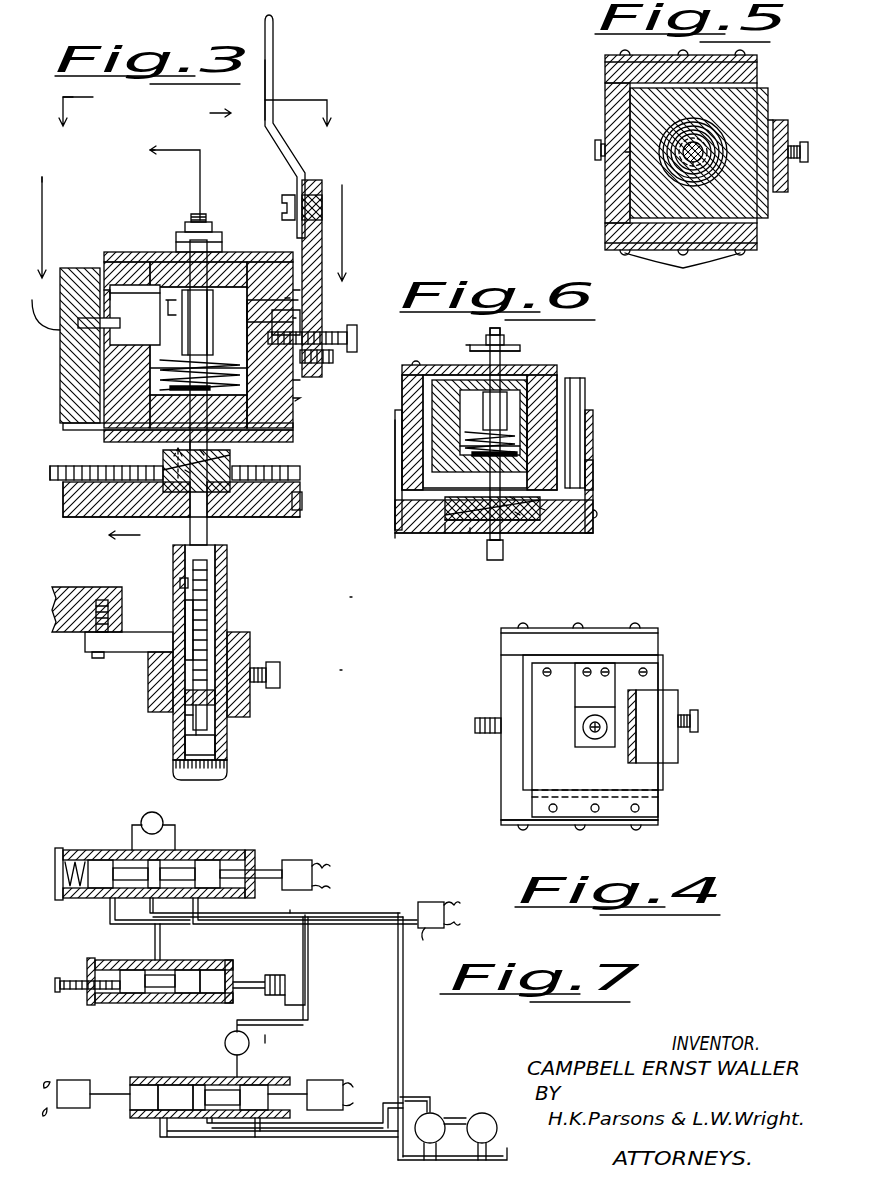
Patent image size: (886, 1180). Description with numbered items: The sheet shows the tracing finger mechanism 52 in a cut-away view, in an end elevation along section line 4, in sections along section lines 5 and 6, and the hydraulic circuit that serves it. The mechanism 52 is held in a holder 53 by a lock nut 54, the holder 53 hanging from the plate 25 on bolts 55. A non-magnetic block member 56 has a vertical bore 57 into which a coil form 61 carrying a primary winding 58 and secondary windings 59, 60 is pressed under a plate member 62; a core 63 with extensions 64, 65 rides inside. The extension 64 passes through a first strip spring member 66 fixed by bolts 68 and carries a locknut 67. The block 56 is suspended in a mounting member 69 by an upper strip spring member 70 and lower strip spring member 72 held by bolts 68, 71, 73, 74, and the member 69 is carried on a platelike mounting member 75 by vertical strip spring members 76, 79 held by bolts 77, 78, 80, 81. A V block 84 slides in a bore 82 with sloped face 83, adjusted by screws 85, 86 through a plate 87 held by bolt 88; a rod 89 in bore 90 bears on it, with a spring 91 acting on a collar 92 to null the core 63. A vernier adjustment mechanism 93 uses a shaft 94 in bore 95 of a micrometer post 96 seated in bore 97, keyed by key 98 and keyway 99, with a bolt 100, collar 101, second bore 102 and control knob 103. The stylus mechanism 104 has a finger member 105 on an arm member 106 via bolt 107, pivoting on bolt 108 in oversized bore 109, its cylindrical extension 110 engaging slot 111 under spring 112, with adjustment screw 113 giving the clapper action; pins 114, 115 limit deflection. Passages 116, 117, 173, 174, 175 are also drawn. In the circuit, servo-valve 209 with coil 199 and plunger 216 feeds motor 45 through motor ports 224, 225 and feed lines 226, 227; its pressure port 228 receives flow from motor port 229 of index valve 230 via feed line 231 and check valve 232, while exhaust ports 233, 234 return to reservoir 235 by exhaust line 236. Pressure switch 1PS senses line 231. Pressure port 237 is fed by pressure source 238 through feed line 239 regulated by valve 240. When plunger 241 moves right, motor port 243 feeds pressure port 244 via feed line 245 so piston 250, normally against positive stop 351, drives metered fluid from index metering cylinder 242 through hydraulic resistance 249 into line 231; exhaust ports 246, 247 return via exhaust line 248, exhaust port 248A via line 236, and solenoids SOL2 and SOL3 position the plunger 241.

In FIG. 3, the section line 4— 4 is at (191, 127).
In FIG. 3, the section line 5— 5 is at (189, 172).
In FIG. 3, the section line 6— 6 is at (124, 342).
In FIG. 3, the plate 25 is at (60, 632).
In FIG. 7, the hydraulic motor 45 is at (145, 812).
In FIG. 3, the tracing finger mechanism 52 is at (357, 610).
In FIG. 3, the holder 53 is at (148, 690).
In FIG. 3, the lock nut 54 is at (278, 676).
In FIG. 3, the bolts 55 is at (95, 652).
In FIG. 3, the block member 56 is at (290, 410).
In FIG. 5, the block member 56 is at (630, 108).
In FIG. 6, the block member 56 is at (555, 380).
In FIG. 4, the block member 56 is at (530, 765).
In FIG. 3, the vertical bore 57 is at (175, 400).
In FIG. 5, the vertical bore 57 is at (705, 140).
In FIG. 6, the vertical bore 57 is at (462, 470).
In FIG. 3, the primary winding 58 is at (295, 320).
In FIG. 5, the primary winding 58 is at (718, 168).
In FIG. 6, the primary winding 58 is at (500, 410).
In FIG. 3, the secondary winding 59 is at (130, 295).
In FIG. 5, the secondary winding 59 is at (697, 166).
In FIG. 3, the secondary winding 60 is at (100, 362).
In FIG. 6, the secondary winding 60 is at (415, 440).
In FIG. 3, the coil form 61 is at (215, 290).
In FIG. 5, the coil form 61 is at (685, 140).
In FIG. 3, the plate member 62 is at (165, 270).
In FIG. 6, the plate member 62 is at (545, 375).
In FIG. 3, the core 63 is at (290, 300).
In FIG. 5, the core 63 is at (683, 160).
In FIG. 6, the core 63 is at (520, 392).
In FIG. 3, the core extension 64 is at (198, 232).
In FIG. 6, the core extension 64 is at (505, 345).
In FIG. 4, the core extension 64 is at (610, 730).
In FIG. 3, the core extension 65 is at (160, 372).
In FIG. 6, the core extension 65 is at (505, 434).
In FIG. 3, the first strip spring member 66 is at (205, 246).
In FIG. 6, the first strip spring member 66 is at (475, 350).
In FIG. 4, the first strip spring member 66 is at (585, 713).
In FIG. 3, the locknut 67 is at (205, 232).
In FIG. 6, the locknut 67 is at (500, 345).
In FIG. 4, the locknut 67 is at (585, 735).
In FIG. 3, the bolts 68 is at (150, 257).
In FIG. 6, the bolts 68 is at (540, 360).
In FIG. 4, the bolts 68 is at (605, 670).
In FIG. 3, the mounting member 69 is at (120, 426).
In FIG. 5, the mounting member 69 is at (755, 236).
In FIG. 6, the mounting member 69 is at (560, 372).
In FIG. 4, the mounting member 69 is at (508, 655).
In FIG. 3, the upper strip spring member 70 is at (120, 262).
In FIG. 6, the upper strip spring member 70 is at (432, 375).
In FIG. 4, the upper strip spring member 70 is at (660, 807).
In FIG. 6, the bolts 71 is at (420, 365).
In FIG. 4, the bolts 71 is at (548, 808).
In FIG. 3, the lower strip spring member 72 is at (290, 434).
In FIG. 6, the lower strip spring member 72 is at (525, 500).
In FIG. 3, the bolts 73 is at (145, 500).
In FIG. 6, the bolts 73 is at (595, 533).
In FIG. 3, the bolts 74 is at (225, 475).
In FIG. 6, the platelike mounting member 75 is at (478, 533).
In FIG. 5, the first vertical strip spring member 76 is at (605, 60).
In FIG. 6, the first vertical strip spring member 76 is at (595, 490).
In FIG. 4, the first vertical strip spring member 76 is at (650, 630).
In FIG. 6, the bolts 77 is at (585, 400).
In FIG. 4, the bolts 77 is at (548, 670).
In FIG. 5, the bolts 78 is at (740, 52).
In FIG. 6, the bolts 78 is at (593, 515).
In FIG. 5, the second vertical strip spring member 79 is at (605, 247).
In FIG. 6, the second vertical strip spring member 79 is at (405, 533).
In FIG. 4, the second vertical strip spring member 79 is at (658, 823).
In FIG. 6, the bolts 80 is at (395, 425).
In FIG. 4, the bolts 80 is at (525, 830).
In FIG. 5, the bolts 81 is at (682, 270).
In FIG. 6, the bolts 81 is at (395, 540).
In FIG. 3, the bore 82 is at (90, 505).
In FIG. 6, the bore 82 is at (450, 533).
In FIG. 3, the sloped face 83 is at (185, 470).
In FIG. 6, the sloped face 83 is at (520, 515).
In FIG. 3, the V block 84 is at (222, 520).
In FIG. 6, the V block 84 is at (545, 510).
In FIG. 3, the screw 85 is at (60, 500).
In FIG. 5, the screw 85 is at (595, 152).
In FIG. 4, the screw 85 is at (478, 718).
In FIG. 3, the screw 86 is at (300, 478).
In FIG. 3, the plate 87 is at (285, 515).
In FIG. 3, the bolt 88 is at (302, 505).
In FIG. 3, the rod 89 is at (205, 450).
In FIG. 6, the rod 89 is at (515, 500).
In FIG. 3, the bore 90 is at (190, 440).
In FIG. 6, the bore 90 is at (490, 540).
In FIG. 3, the spring 91 is at (170, 376).
In FIG. 6, the spring 91 is at (470, 448).
In FIG. 3, the collar 92 is at (170, 388).
In FIG. 6, the collar 92 is at (490, 452).
In FIG. 3, the vernier adjustment mechanism 93 is at (350, 674).
In FIG. 3, the shaft 94 is at (215, 632).
In FIG. 6, the shaft 94 is at (495, 560).
In FIG. 3, the bore 95 is at (185, 715).
In FIG. 3, the micrometer post 96 is at (175, 755).
In FIG. 3, the bore 97 is at (160, 660).
In FIG. 3, the key 98 is at (180, 585).
In FIG. 3, the keyway 99 is at (190, 612).
In FIG. 3, the bolt 100 is at (250, 638).
In FIG. 3, the collar 101 is at (215, 700).
In FIG. 3, the second bore 102 is at (210, 735).
In FIG. 3, the control knob 103 is at (225, 770).
In FIG. 3, the stylus mechanism 104 is at (217, 93).
In FIG. 3, the finger member 105 is at (276, 62).
In FIG. 5, the finger member 105 is at (780, 135).
In FIG. 4, the finger member 105 is at (635, 715).
In FIG. 3, the arm member 106 is at (312, 185).
In FIG. 5, the arm member 106 is at (790, 135).
In FIG. 4, the arm member 106 is at (672, 760).
In FIG. 3, the bolt 107 is at (286, 196).
In FIG. 3, the bolt 108 is at (358, 336).
In FIG. 5, the bolt 108 is at (800, 162).
In FIG. 4, the bolt 108 is at (700, 720).
In FIG. 3, the oversized bore 109 is at (293, 312).
In FIG. 3, the cylindrical extension 110 is at (300, 290).
In FIG. 3, the slot 111 is at (305, 300).
In FIG. 3, the spring 112 is at (332, 334).
In FIG. 3, the adjustment screw 113 is at (335, 357).
In FIG. 6, the pin 114 is at (600, 500).
In FIG. 3, the pin 115 is at (110, 325).
In FIG. 3, the passage 116 is at (300, 384).
In FIG. 3, the passage 117 is at (300, 402).
In FIG. 3, the passage 173 is at (110, 296).
In FIG. 3, the passage 174 is at (105, 292).
In FIG. 3, the conduit 175 is at (32, 300).
In FIG. 7, the coil 199 is at (312, 865).
In FIG. 7, the servo-valve 209 is at (75, 850).
In FIG. 7, the plunger 216 is at (248, 862).
In FIG. 7, the motor port 224 is at (205, 850).
In FIG. 7, the motor port 225 is at (128, 850).
In FIG. 7, the feed line 226 is at (178, 850).
In FIG. 7, the feed line 227 is at (130, 850).
In FIG. 7, the pressure port 228 is at (150, 915).
In FIG. 7, the motor port 229 is at (245, 1078).
In FIG. 7, the index valve 230 is at (300, 1070).
In FIG. 7, the feed line 231 is at (310, 1010).
In FIG. 7, the check valve 232 is at (262, 1030).
In FIG. 7, the exhaust port 233 is at (110, 898).
In FIG. 7, the exhaust port 234 is at (200, 912).
In FIG. 7, the reservoir 235 is at (512, 1157).
In FIG. 7, the exhaust line 236 is at (350, 940).
In FIG. 7, the pressure port 237 is at (205, 1125).
In FIG. 7, the pressure source 238 is at (447, 1110).
In FIG. 7, the feed line 239 is at (365, 1130).
In FIG. 7, the pressure regulating valve 240 is at (490, 1108).
In FIG. 7, the plunger 241 is at (135, 1083).
In FIG. 7, the index metering cylinder 242 is at (225, 970).
In FIG. 7, the motor port 243 is at (190, 1083).
In FIG. 7, the pressure port 244 is at (98, 1003).
In FIG. 7, the feed line 245 is at (130, 1003).
In FIG. 7, the exhaust port 246 is at (162, 1118).
In FIG. 7, the exhaust port 247 is at (255, 1128).
In FIG. 7, the exhaust line 248 is at (290, 955).
In FIG. 7, the exhaust port 248A is at (160, 962).
In FIG. 7, the hydraulic resistance 249 is at (290, 995).
In FIG. 7, the piston 250 is at (190, 1003).
In FIG. 7, the positive stop 351 is at (75, 980).
In FIG. 7, the pressure switch 1PS is at (439, 926).
In FIG. 7, the solenoid SOL2 is at (70, 1105).
In FIG. 7, the solenoid SOL3 is at (325, 1085).